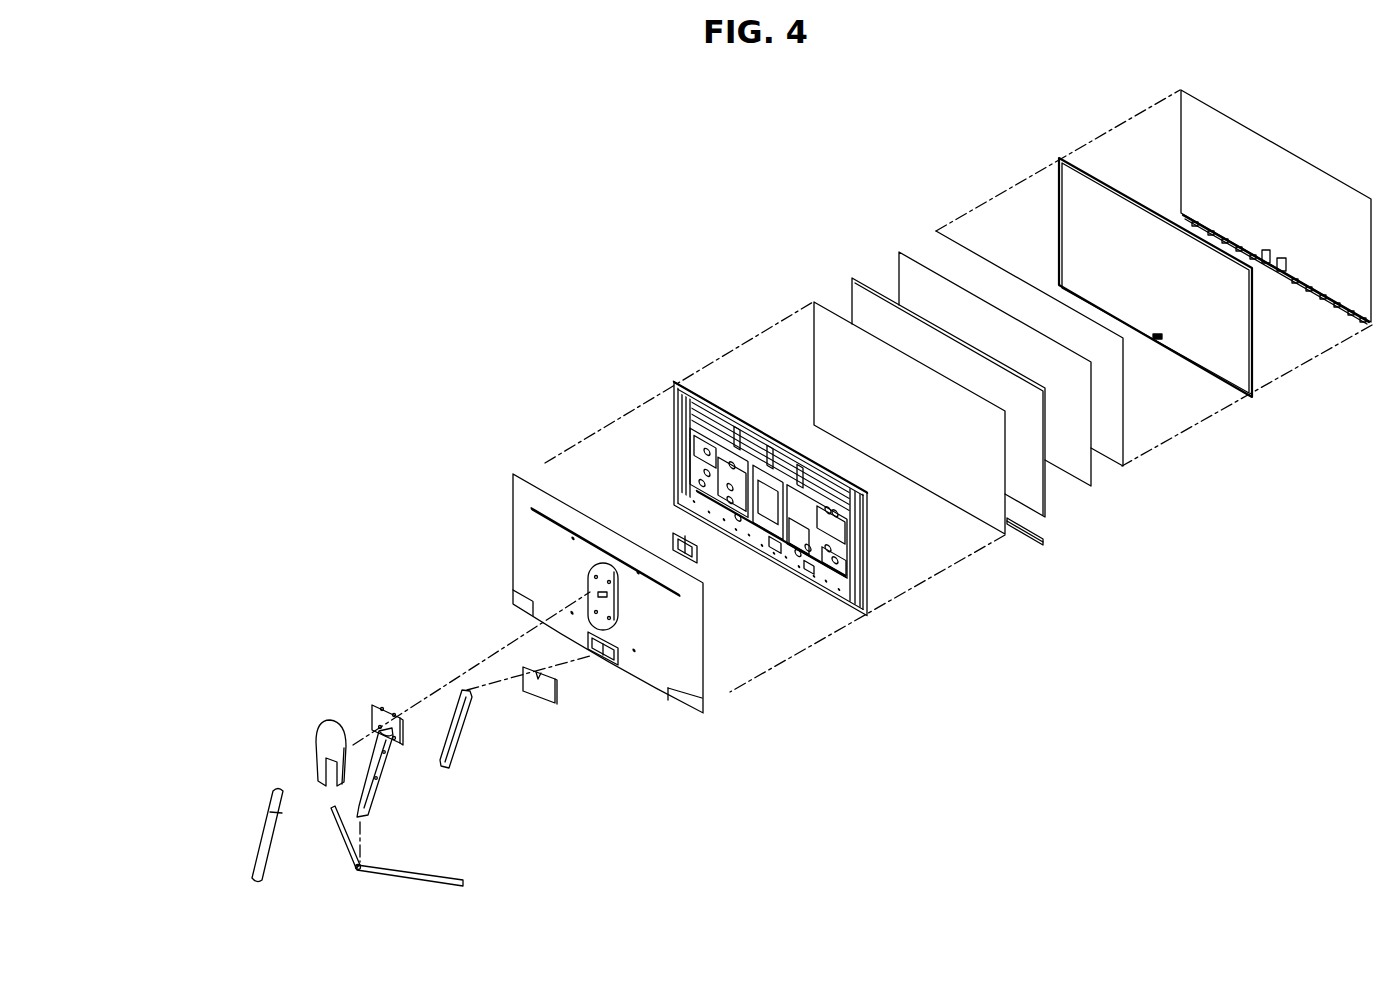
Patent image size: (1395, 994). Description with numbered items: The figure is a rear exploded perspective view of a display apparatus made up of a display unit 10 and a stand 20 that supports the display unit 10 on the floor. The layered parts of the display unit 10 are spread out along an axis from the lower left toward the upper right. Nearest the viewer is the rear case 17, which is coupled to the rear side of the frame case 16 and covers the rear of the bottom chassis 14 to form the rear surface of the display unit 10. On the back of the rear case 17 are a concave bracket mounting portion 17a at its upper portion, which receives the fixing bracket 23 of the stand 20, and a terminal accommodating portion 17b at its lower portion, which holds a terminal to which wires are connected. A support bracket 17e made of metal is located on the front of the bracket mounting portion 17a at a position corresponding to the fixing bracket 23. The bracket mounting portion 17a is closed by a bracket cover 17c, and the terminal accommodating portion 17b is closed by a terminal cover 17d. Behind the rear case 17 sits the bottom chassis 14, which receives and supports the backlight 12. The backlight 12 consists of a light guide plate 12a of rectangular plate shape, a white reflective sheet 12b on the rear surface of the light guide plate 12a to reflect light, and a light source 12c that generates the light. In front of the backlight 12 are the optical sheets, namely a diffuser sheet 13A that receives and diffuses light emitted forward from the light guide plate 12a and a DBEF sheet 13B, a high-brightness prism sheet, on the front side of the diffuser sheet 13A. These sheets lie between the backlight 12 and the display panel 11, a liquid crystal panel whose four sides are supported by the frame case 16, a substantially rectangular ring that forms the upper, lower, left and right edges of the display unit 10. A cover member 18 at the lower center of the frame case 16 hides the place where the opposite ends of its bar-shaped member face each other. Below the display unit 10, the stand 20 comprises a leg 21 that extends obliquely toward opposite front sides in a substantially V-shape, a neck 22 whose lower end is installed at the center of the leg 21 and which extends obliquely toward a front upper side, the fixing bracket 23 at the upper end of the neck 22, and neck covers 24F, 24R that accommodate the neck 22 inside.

The display unit 10 is at (935, 206).
The display panel 11 is at (1336, 180).
The backlight 12 is at (1090, 565).
The light guide plate 12a is at (1037, 498).
The white reflective sheet 12b is at (960, 503).
The light source 12c is at (1034, 544).
The diffuser sheet 13A is at (1090, 468).
The DBEF sheet 13B is at (1123, 448).
The bottom chassis 14 is at (868, 593).
The frame case 16 is at (1253, 355).
The rear case 17 is at (699, 670).
The bracket mounting portion 17a is at (601, 567).
The terminal accommodating portion 17b is at (600, 664).
The bracket cover 17c is at (327, 730).
The terminal cover 17d is at (540, 690).
The support bracket 17e is at (699, 553).
The cover member 18 is at (1157, 340).
The stand 20 is at (350, 879).
The leg 21 is at (432, 882).
The neck 22 is at (380, 786).
The fixing bracket 23 is at (383, 706).
The neck cover 24F is at (457, 748).
The neck cover 24R is at (262, 835).